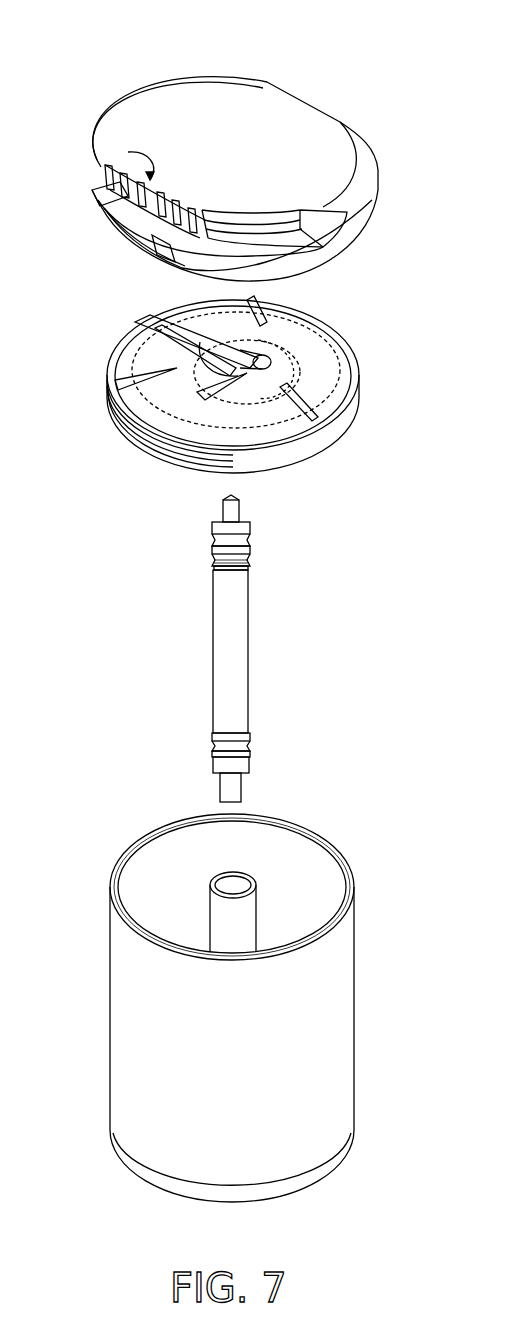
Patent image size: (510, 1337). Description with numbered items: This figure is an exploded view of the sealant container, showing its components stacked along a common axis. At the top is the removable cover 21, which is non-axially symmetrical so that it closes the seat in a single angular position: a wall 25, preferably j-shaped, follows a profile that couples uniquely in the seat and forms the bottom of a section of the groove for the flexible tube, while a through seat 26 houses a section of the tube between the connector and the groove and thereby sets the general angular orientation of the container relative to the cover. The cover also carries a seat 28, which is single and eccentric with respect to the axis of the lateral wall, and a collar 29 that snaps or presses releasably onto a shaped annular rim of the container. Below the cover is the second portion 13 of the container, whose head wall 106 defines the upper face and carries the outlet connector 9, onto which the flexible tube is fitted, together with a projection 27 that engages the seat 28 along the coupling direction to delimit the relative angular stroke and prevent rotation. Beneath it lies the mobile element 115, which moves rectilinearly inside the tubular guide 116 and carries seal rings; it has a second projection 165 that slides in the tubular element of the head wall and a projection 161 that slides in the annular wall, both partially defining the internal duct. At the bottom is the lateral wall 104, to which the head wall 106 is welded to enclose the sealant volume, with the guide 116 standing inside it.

The removable cover 21 is at (189, 82).
The through seat 26 is at (313, 205).
The seat 28 is at (112, 162).
The wall 25 is at (96, 206).
The collar 29 is at (185, 262).
The second portion 13 is at (135, 435).
The head wall 106 is at (302, 318).
The outlet connector 9 is at (268, 368).
The projection 27 is at (128, 372).
The mobile element 115 is at (250, 524).
The second projection 165 is at (228, 512).
The projection 161 is at (232, 785).
The lateral wall 104 is at (338, 1032).
The guide 116 is at (218, 905).